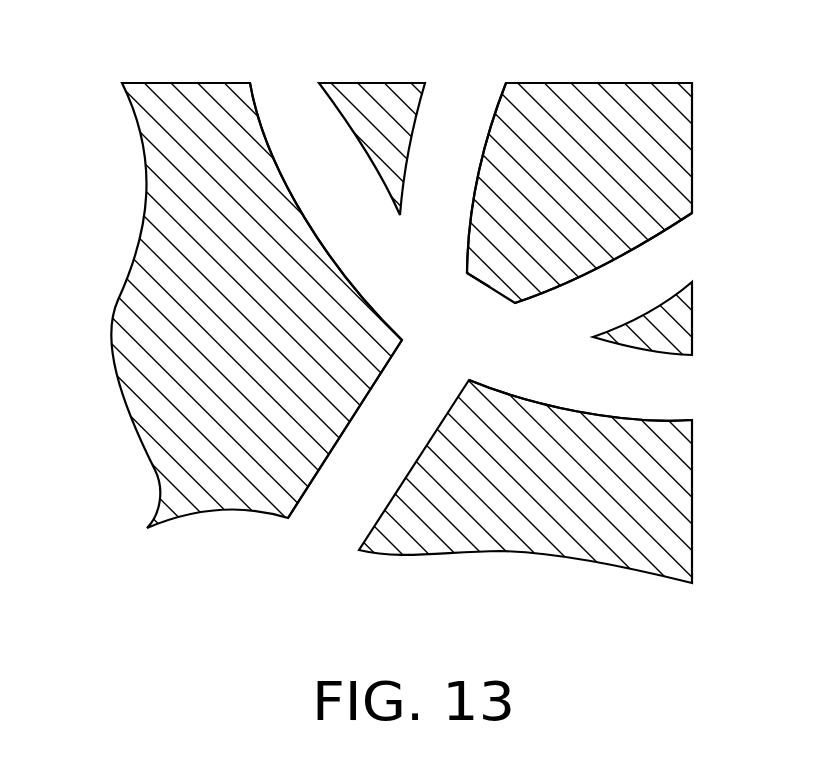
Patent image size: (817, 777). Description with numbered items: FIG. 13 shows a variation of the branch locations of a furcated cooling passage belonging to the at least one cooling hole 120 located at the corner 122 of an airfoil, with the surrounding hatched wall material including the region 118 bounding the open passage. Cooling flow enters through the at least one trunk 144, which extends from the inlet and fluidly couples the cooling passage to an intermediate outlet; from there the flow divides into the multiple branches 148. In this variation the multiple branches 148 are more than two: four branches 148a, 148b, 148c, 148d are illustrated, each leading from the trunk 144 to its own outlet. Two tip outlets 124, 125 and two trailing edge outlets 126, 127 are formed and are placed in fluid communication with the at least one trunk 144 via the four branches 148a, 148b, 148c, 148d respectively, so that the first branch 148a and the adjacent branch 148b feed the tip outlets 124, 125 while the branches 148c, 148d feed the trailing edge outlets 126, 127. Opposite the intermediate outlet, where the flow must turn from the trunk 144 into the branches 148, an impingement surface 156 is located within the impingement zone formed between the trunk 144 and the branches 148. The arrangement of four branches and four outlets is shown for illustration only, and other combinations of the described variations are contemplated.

The jaw body 118 is at (572, 534).
The cooling hole 120 is at (402, 303).
The corner 122 is at (696, 54).
The tip outlet 124 is at (277, 76).
The tip outlet 125 is at (469, 76).
The trailing edge outlet 126 is at (692, 239).
The trailing edge outlet 127 is at (692, 387).
The trunk 144 is at (375, 511).
The branches 148 is at (360, 245).
The first branch 148a is at (357, 191).
The second branch 148b is at (470, 190).
The third branch 148c is at (623, 314).
The fourth branch 148d is at (623, 390).
The impingement surface 156 is at (490, 290).